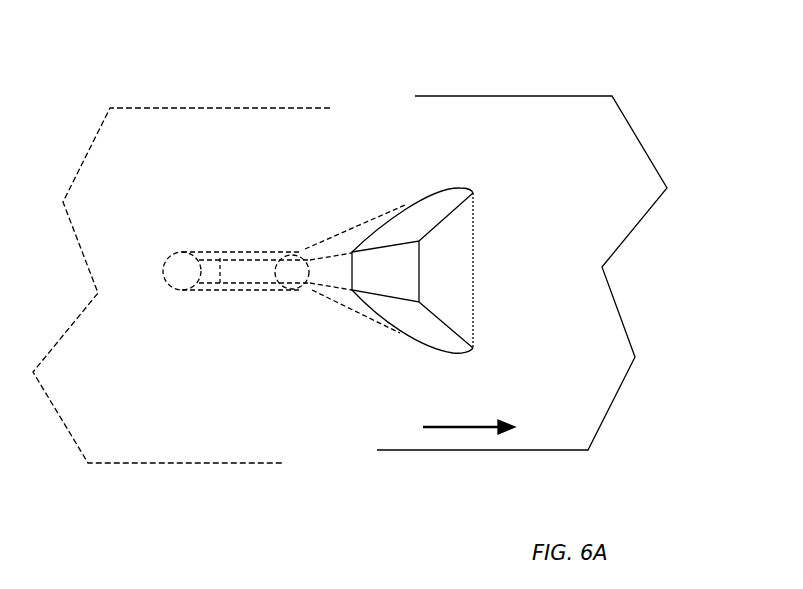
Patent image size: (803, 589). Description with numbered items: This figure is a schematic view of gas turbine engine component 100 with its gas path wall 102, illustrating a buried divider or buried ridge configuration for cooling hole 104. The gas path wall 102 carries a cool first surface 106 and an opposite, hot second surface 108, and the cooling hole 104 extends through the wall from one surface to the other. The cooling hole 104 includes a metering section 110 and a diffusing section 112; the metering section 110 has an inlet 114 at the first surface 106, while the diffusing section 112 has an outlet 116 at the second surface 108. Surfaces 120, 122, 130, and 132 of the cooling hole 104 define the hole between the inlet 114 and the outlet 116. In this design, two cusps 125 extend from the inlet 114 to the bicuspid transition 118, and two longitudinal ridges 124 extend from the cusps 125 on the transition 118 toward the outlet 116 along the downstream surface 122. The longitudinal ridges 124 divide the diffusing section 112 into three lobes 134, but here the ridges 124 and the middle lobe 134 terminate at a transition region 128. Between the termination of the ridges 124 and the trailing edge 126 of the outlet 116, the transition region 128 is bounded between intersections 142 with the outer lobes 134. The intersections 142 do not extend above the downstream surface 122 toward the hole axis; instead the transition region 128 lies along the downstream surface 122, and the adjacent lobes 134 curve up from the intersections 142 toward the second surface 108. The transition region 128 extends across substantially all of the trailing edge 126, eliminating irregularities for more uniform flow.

The gas turbine engine component 100 is at (98, 64).
The gas path wall 102 is at (352, 440).
The cooling hole 104 is at (209, 382).
The first surface 106 is at (77, 170).
The second surface 108 is at (638, 135).
The metering section 110 is at (225, 268).
The diffusing section 112 is at (422, 266).
The inlet 114 is at (178, 252).
The outlet 116 is at (428, 192).
The transition 118 is at (312, 243).
The surface 120 is at (358, 247).
The downstream surface 122 is at (408, 280).
The longitudinal ridges 124 is at (390, 246).
The cusps 125 is at (238, 260).
The trailing edge 126 is at (475, 223).
The transition region 128 is at (468, 264).
The surface 130 is at (260, 258).
The surface 132 is at (218, 262).
The lobes 134 is at (455, 195).
The intersections 142 is at (438, 313).